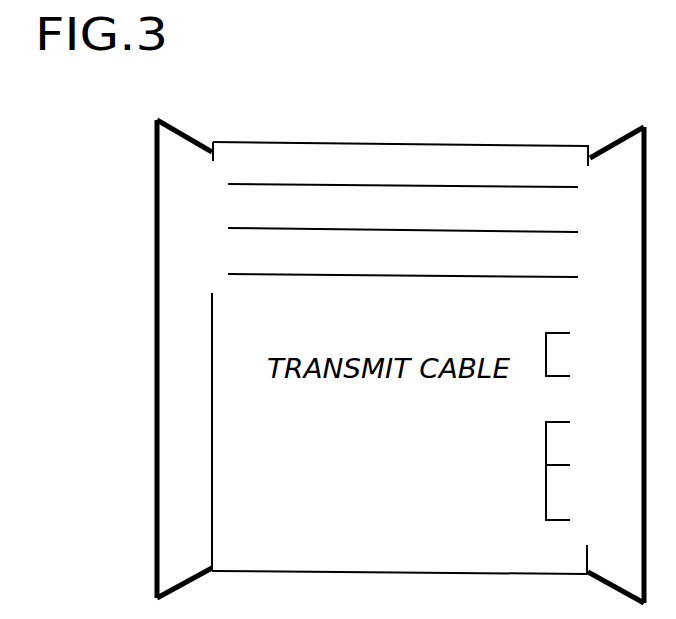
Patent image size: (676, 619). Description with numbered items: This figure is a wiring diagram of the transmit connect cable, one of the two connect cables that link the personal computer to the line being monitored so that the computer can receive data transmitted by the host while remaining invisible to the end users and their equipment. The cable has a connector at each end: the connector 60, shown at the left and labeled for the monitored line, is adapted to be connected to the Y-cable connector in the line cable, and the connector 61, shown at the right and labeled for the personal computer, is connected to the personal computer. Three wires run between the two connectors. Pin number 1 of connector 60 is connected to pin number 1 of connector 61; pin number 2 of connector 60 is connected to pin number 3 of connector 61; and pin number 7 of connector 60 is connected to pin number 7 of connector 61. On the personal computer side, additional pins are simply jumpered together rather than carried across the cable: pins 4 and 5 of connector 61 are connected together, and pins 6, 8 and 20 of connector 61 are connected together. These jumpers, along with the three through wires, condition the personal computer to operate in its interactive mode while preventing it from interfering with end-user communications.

The connector 60 is at (173, 126).
The connector 61 is at (631, 123).
The pin number 1 is at (400, 186).
The pin number 2 is at (391, 231).
The pin number 3 is at (582, 235).
The pin number 7 is at (400, 277).
The pin 4 is at (570, 348).
The pin 5 is at (577, 376).
The pin 6 is at (570, 468).
The pin 8 is at (577, 473).
The pin 20 is at (584, 524).